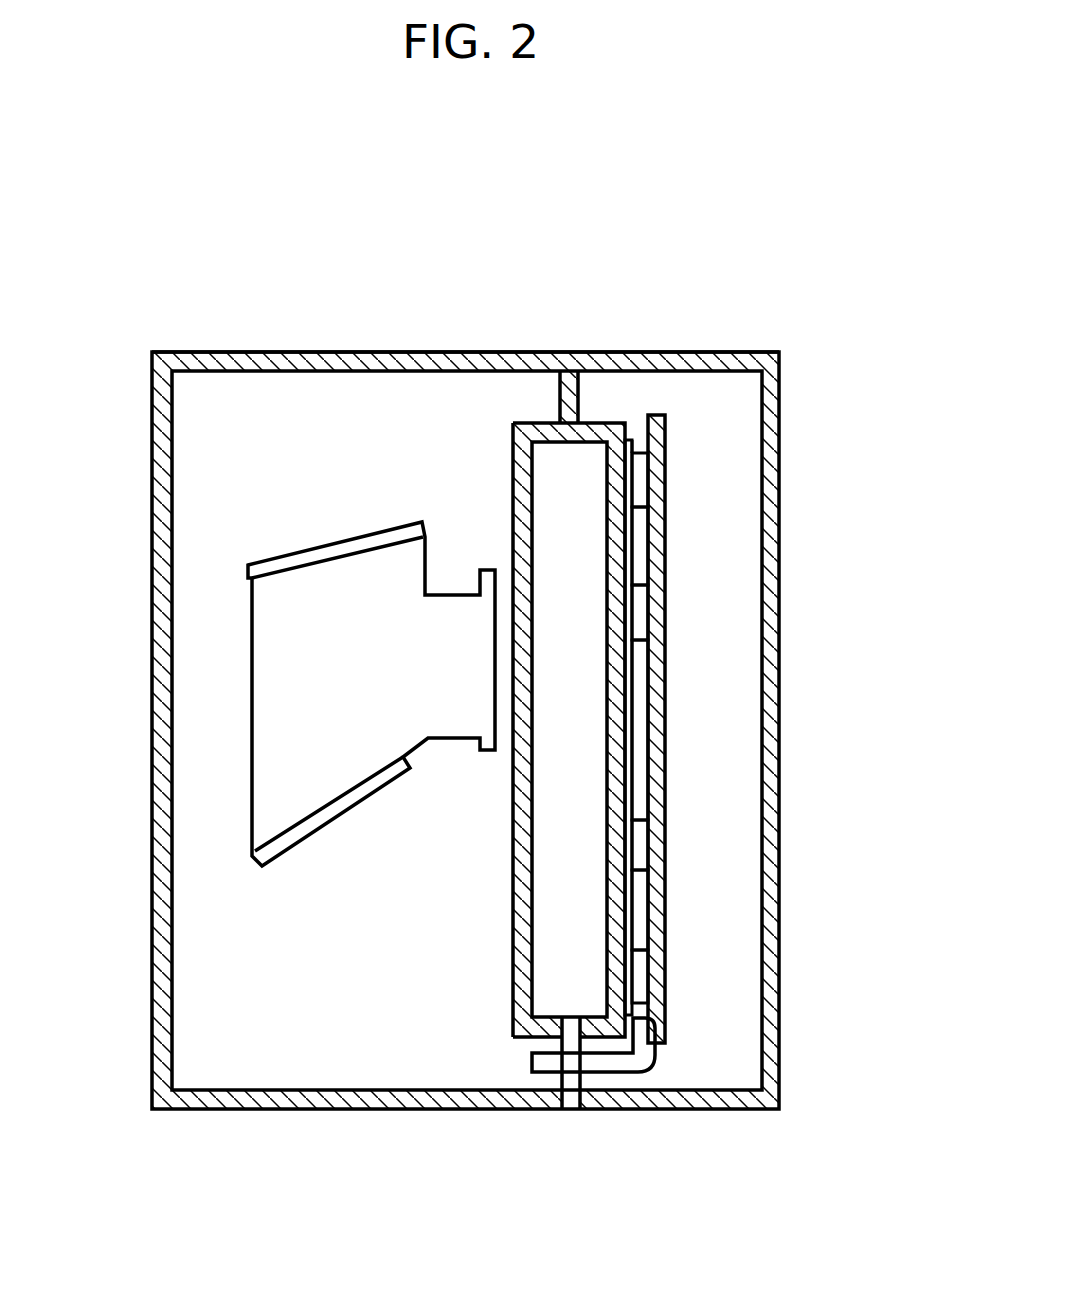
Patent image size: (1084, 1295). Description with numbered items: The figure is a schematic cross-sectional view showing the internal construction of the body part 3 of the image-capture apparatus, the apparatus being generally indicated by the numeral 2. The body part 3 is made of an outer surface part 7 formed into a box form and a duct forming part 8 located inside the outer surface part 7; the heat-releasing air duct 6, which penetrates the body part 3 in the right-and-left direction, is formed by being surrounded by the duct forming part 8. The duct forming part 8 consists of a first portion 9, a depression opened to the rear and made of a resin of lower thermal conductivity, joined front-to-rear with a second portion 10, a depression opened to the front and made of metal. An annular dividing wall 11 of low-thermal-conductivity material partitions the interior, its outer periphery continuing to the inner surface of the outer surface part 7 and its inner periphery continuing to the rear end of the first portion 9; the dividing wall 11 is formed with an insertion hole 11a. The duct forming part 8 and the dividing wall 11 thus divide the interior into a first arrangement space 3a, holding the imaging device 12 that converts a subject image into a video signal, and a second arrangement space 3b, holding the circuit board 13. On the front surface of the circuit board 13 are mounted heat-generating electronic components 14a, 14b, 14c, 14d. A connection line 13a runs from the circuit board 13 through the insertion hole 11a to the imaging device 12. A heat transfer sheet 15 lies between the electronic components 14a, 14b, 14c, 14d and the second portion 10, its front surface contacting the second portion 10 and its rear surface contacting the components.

The electronic apparatus 2 is at (742, 214).
The body part 3 is at (296, 352).
The first arrangement space 3a is at (438, 905).
The second arrangement space 3b is at (733, 730).
The heat-releasing air duct 6 is at (584, 730).
The outer surface part 7 is at (374, 352).
The duct forming part 8 is at (588, 426).
The first portion 9 is at (508, 478).
The second portion 10 is at (628, 440).
The dividing wall 11 is at (562, 400).
The insertion hole 11a is at (570, 1075).
The imaging device 12 is at (310, 836).
The circuit board 13 is at (665, 909).
The connection line 13a is at (612, 1065).
The electronic component 14a is at (645, 478).
The electronic component 14b is at (645, 608).
The electronic component 14c is at (645, 845).
The electronic component 14d is at (645, 977).
The heat transfer sheet 15 is at (634, 437).